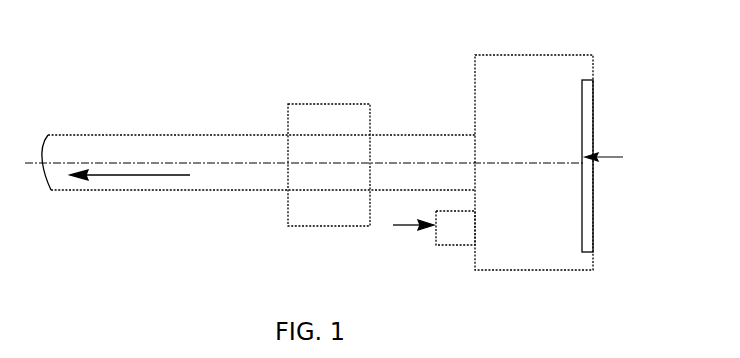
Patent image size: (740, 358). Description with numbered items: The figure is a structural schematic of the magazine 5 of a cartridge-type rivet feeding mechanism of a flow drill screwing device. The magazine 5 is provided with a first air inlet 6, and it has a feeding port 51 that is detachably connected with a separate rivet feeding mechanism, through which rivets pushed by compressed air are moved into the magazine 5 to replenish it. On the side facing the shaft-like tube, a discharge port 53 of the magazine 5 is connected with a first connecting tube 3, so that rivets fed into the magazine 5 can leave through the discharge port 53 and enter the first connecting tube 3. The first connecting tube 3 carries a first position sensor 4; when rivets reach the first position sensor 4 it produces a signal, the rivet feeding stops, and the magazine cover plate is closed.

The first connecting tube 3 is at (112, 143).
The first position sensor 4 is at (322, 117).
The magazine 5 is at (508, 73).
The first air inlet 6 is at (443, 231).
The feeding port 51 is at (598, 223).
The discharge port 53 is at (470, 107).